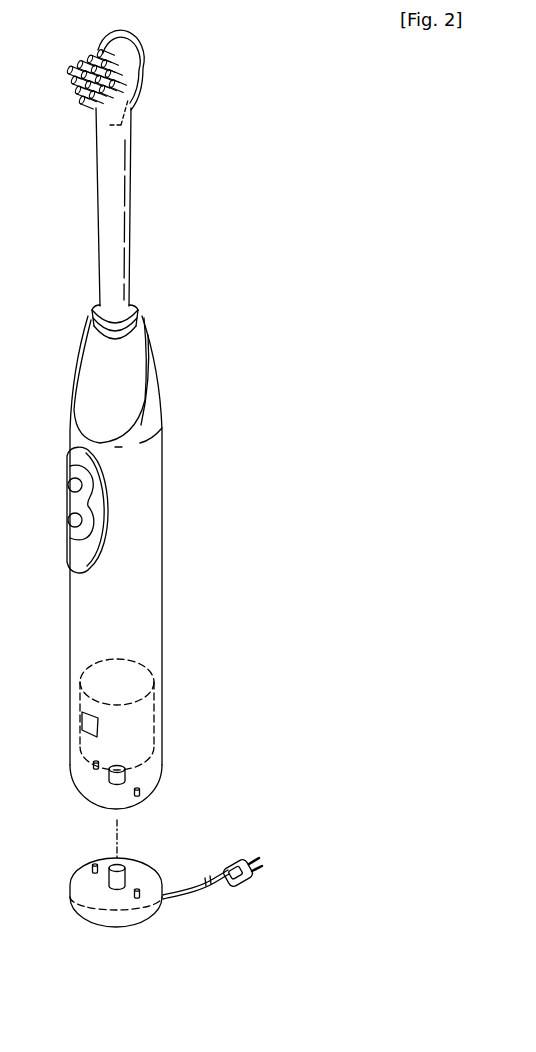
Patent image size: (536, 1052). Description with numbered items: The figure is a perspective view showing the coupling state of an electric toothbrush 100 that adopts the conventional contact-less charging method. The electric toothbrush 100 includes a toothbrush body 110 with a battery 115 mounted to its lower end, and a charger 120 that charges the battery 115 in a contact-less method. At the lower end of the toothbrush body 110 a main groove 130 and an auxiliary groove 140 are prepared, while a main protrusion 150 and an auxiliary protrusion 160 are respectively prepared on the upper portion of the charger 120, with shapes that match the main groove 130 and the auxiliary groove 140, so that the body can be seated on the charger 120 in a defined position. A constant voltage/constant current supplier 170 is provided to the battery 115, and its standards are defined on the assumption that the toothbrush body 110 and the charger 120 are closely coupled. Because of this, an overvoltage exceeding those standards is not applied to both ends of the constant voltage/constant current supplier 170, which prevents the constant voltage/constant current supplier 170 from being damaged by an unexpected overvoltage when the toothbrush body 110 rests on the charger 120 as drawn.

The electric toothbrush 100 is at (205, 534).
The toothbrush body 110 is at (82, 612).
The battery 115 is at (95, 678).
The charger 120 is at (83, 895).
The main groove 130 is at (110, 782).
The auxiliary groove 140 is at (93, 765).
The main protrusion 150 is at (121, 867).
The auxiliary protrusion 160 is at (92, 865).
The constant voltage/constant current supplier 170 is at (82, 724).